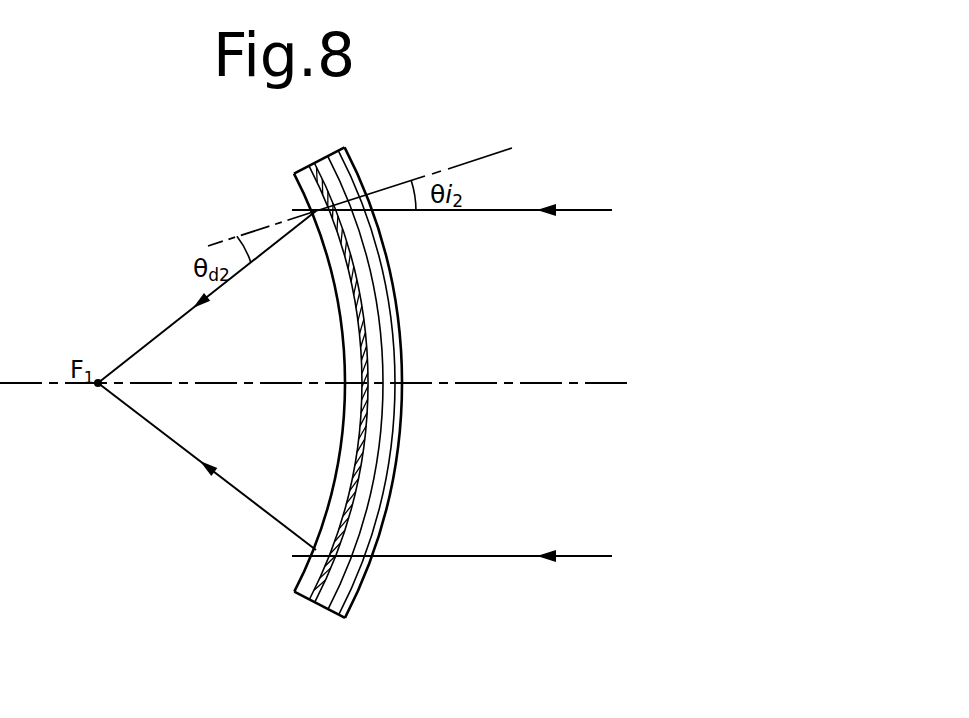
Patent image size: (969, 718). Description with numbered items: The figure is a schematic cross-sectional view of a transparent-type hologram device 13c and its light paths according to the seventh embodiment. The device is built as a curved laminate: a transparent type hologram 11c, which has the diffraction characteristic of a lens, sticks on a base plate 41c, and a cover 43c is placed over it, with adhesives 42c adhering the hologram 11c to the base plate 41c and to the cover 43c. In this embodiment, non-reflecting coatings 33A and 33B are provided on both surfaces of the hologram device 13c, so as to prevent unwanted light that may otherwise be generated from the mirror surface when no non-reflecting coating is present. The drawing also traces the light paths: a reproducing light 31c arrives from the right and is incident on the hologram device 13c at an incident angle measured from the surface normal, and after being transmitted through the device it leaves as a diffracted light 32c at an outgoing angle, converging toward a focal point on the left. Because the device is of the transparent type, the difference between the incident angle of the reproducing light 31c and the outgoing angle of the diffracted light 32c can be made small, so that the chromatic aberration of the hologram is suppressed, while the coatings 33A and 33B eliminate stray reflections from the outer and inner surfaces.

The transparent-type hologram device 13c is at (359, 377).
The reproducing light 31c is at (581, 209).
The diffracted light 32c is at (152, 428).
The non-reflecting coating 33A is at (393, 285).
The non-reflecting coating 33B is at (340, 310).
The base plate 41c is at (307, 567).
The adhesives 42c is at (368, 470).
The cover 43c is at (355, 588).
The transparent type hologram 11c is at (318, 604).